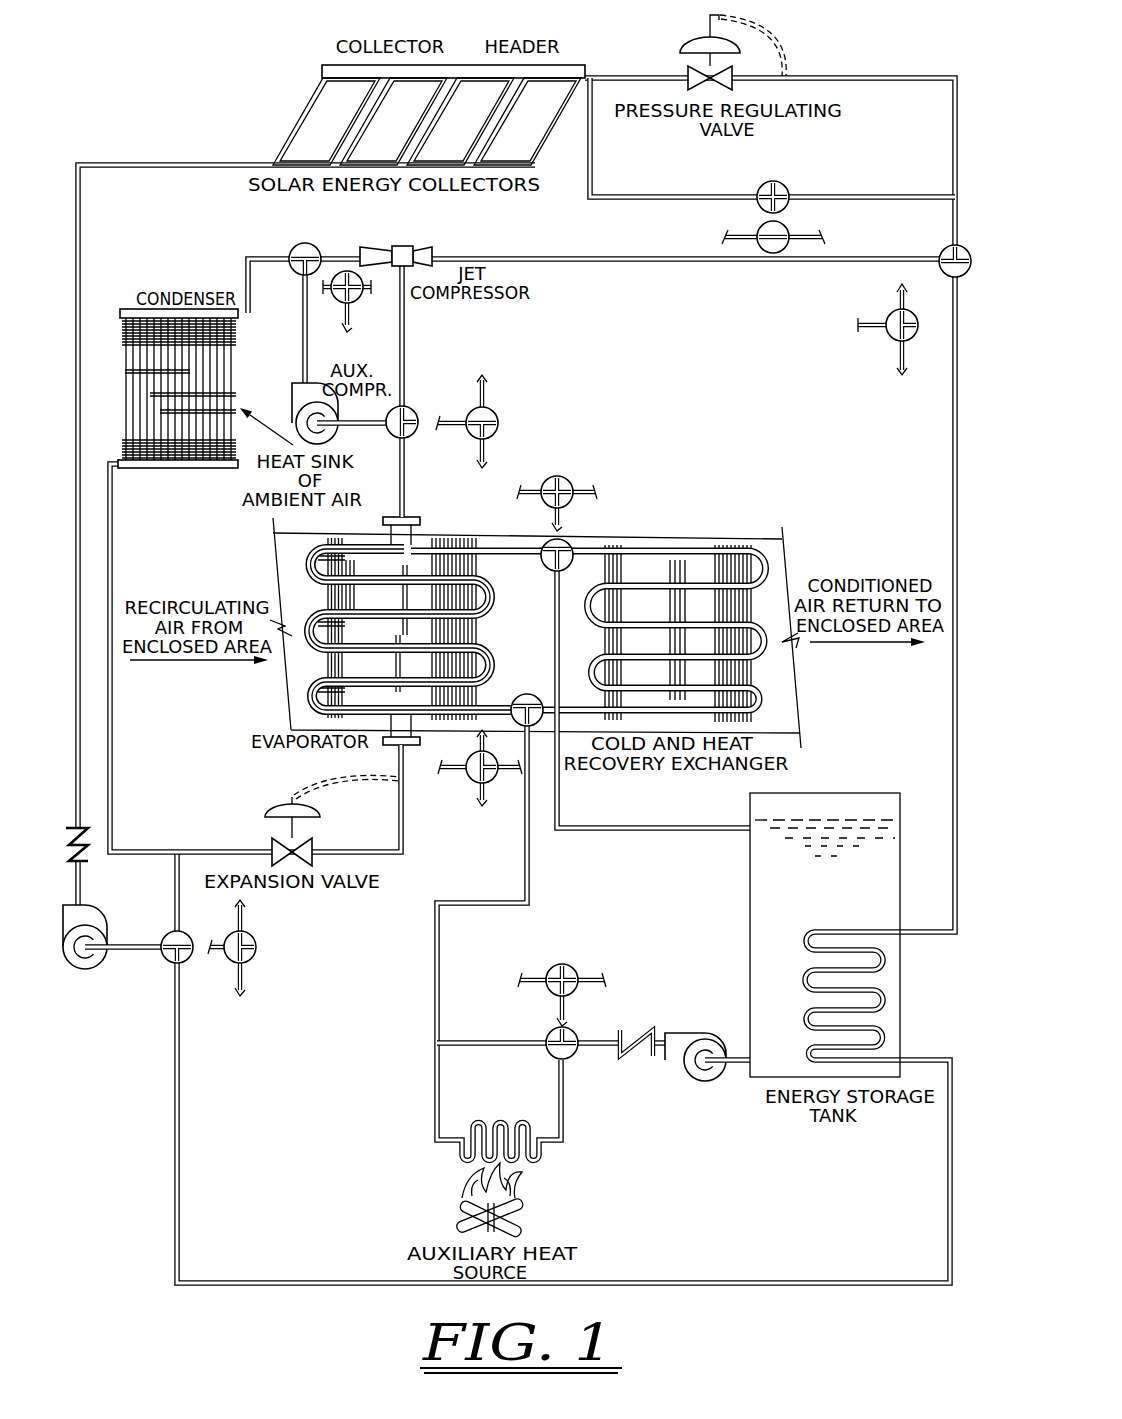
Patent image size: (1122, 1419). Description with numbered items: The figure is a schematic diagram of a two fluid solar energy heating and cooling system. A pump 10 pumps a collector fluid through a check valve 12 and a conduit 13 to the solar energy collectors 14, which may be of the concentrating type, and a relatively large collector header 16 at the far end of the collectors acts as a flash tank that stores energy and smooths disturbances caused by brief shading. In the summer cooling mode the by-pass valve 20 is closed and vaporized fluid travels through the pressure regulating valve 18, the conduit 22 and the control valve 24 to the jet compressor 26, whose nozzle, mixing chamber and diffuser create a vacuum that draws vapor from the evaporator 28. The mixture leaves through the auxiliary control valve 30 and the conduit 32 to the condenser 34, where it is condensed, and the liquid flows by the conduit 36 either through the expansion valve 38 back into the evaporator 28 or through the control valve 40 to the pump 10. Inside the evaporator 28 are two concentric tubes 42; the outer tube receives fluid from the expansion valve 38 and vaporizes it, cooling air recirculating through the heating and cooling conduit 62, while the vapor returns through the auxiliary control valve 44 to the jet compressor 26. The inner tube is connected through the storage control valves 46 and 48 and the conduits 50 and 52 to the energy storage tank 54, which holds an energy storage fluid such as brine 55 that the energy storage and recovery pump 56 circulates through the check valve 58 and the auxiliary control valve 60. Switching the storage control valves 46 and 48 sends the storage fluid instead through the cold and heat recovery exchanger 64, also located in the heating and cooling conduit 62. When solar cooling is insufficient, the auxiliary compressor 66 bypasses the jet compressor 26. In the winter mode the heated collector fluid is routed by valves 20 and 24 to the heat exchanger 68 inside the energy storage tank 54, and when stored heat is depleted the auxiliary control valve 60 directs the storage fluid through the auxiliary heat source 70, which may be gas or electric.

The pump 10 is at (100, 930).
The check valve 12 is at (82, 847).
The conduit 13 is at (82, 218).
The solar energy collectors 14 is at (277, 112).
The collector header 16 is at (579, 64).
The pressure regulating valve 18 is at (688, 68).
The by-pass valve 20 is at (779, 181).
The conduit 22 is at (953, 157).
The control valve 24 is at (945, 254).
The jet compressor 26 is at (404, 246).
The evaporator 28 is at (296, 562).
The auxiliary control valve 30 is at (311, 244).
The conduit 32 is at (245, 260).
The condenser 34 is at (128, 307).
The conduit 36 is at (112, 763).
The expansion valve 38 is at (272, 847).
The control valve 40 is at (171, 957).
The concentric tubes 42 is at (494, 607).
The auxiliary control valve 44 is at (410, 414).
The storage control valve 46 is at (528, 698).
The storage control valve 48 is at (548, 572).
The conduit 50 is at (530, 881).
The conduit 52 is at (656, 828).
The energy storage tank 54 is at (862, 793).
The brine 55 is at (839, 892).
The energy storage and recovery pump 56 is at (701, 1034).
The check valve 58 is at (639, 1038).
The auxiliary control valve 60 is at (576, 1053).
The heating and cooling conduit 62 is at (690, 538).
The cold and heat recovery exchanger 64 is at (754, 655).
The auxiliary compressor 66 is at (292, 392).
The heat exchanger 68 is at (808, 968).
The auxiliary heat source 70 is at (492, 1130).